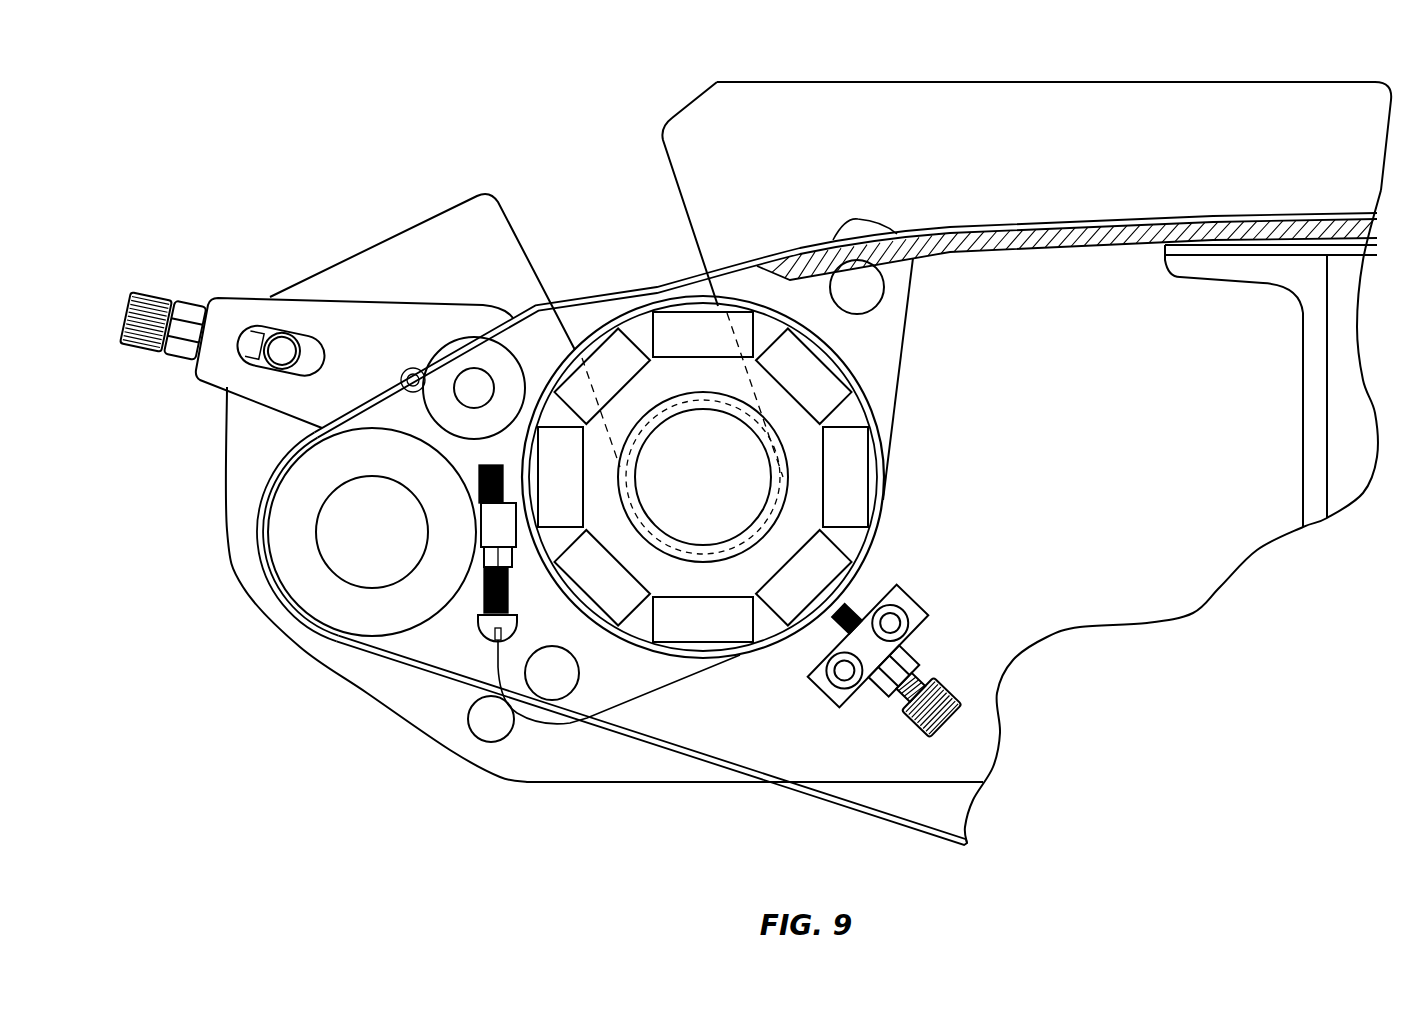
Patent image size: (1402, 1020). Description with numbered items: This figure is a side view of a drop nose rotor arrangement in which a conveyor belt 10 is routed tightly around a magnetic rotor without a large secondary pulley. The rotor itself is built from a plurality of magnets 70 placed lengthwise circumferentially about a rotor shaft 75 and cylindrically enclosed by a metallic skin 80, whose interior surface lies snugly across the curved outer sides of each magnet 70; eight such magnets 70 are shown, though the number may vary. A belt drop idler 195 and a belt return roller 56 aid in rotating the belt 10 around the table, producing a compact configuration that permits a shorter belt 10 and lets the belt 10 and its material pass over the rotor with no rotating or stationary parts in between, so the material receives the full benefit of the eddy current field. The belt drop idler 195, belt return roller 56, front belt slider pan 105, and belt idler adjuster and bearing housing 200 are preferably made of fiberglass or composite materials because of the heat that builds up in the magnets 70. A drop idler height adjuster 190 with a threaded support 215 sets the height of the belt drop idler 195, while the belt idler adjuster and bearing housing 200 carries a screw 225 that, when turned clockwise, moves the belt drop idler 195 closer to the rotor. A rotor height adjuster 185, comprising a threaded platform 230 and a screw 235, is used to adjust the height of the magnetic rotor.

The conveyor belt 10 is at (977, 223).
The belt return roller 56 is at (320, 592).
The magnets 70 is at (673, 332).
The rotor shaft 75 is at (691, 491).
The metallic skin 80 is at (873, 405).
The front belt slider pan 105 is at (1043, 233).
The rotor height adjuster 185 is at (822, 695).
The drop idler height adjuster 190 is at (478, 632).
The belt drop idler 195 is at (475, 358).
The belt idler adjuster and bearing housing 200 is at (338, 333).
The threaded support 215 is at (497, 527).
The screw 225 is at (138, 357).
The threaded platform 230 is at (835, 680).
The screw 235 is at (952, 683).